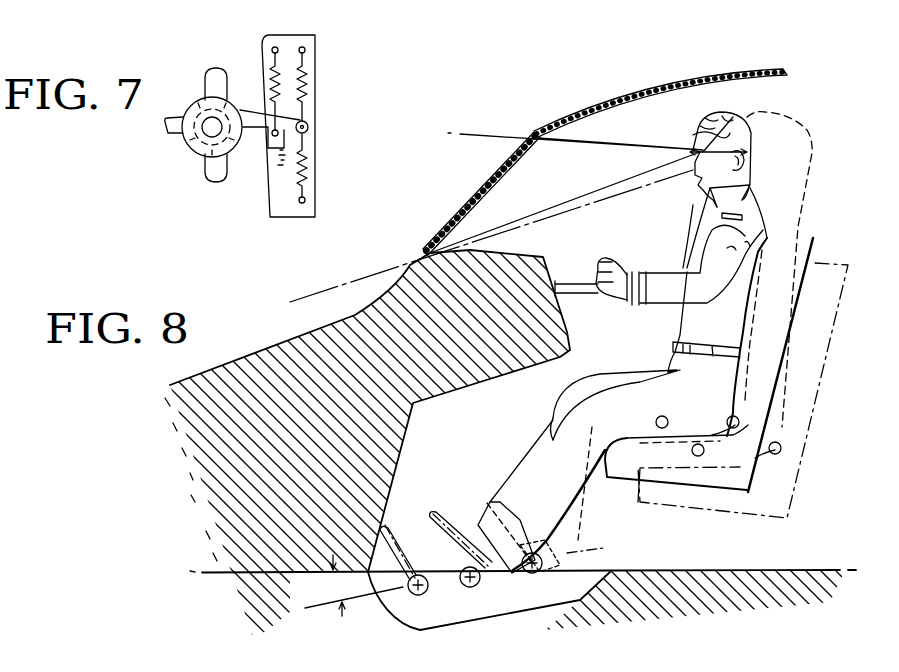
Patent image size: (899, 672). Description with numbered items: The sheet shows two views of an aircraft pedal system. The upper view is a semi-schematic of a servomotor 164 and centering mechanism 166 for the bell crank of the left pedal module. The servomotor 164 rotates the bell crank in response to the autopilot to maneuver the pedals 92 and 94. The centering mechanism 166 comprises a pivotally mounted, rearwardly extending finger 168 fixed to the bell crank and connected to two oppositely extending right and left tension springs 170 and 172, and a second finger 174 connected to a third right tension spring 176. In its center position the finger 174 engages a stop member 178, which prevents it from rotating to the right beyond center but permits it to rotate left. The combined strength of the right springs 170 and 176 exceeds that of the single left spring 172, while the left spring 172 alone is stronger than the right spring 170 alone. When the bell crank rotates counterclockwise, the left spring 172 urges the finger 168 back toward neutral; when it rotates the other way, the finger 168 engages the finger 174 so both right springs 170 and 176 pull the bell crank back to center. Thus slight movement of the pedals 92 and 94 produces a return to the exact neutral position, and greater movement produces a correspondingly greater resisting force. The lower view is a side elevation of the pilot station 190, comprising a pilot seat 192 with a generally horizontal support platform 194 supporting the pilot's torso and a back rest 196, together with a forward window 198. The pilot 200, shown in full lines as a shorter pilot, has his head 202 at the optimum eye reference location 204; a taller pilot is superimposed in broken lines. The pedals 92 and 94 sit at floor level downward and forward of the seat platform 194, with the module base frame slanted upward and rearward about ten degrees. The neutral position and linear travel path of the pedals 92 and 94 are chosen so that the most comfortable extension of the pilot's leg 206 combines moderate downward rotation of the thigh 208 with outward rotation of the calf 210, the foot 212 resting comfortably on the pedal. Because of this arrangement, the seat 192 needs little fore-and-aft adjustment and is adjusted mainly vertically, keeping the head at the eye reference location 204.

In FIG. 7, the servomotor 164 is at (192, 100).
In FIG. 7, the centering mechanism 166 is at (332, 106).
In FIG. 7, the finger 168 is at (290, 118).
In FIG. 7, the right tension spring 170 is at (312, 85).
In FIG. 7, the left tension spring 172 is at (308, 171).
In FIG. 7, the second finger 174 is at (258, 147).
In FIG. 7, the third right tension spring 176 is at (268, 83).
In FIG. 7, the stop member 178 is at (170, 135).
In FIG. 8, the pilot station 190 is at (632, 122).
In FIG. 8, the pilot seat 192 is at (733, 460).
In FIG. 8, the support platform 194 is at (665, 473).
In FIG. 8, the back rest 196 is at (813, 238).
In FIG. 8, the forward window 198 is at (497, 178).
In FIG. 8, the pilot 200 is at (661, 229).
In FIG. 8, the head 202 is at (733, 117).
In FIG. 8, the optimum eye reference location 204 is at (700, 150).
In FIG. 8, the leg 206 is at (553, 433).
In FIG. 8, the thigh 208 is at (627, 400).
In FIG. 8, the calf 210 is at (537, 470).
In FIG. 8, the foot 212 is at (462, 537).
In FIG. 8, the left pedal 92 is at (420, 528).
In FIG. 8, the right pedal 94 is at (492, 502).